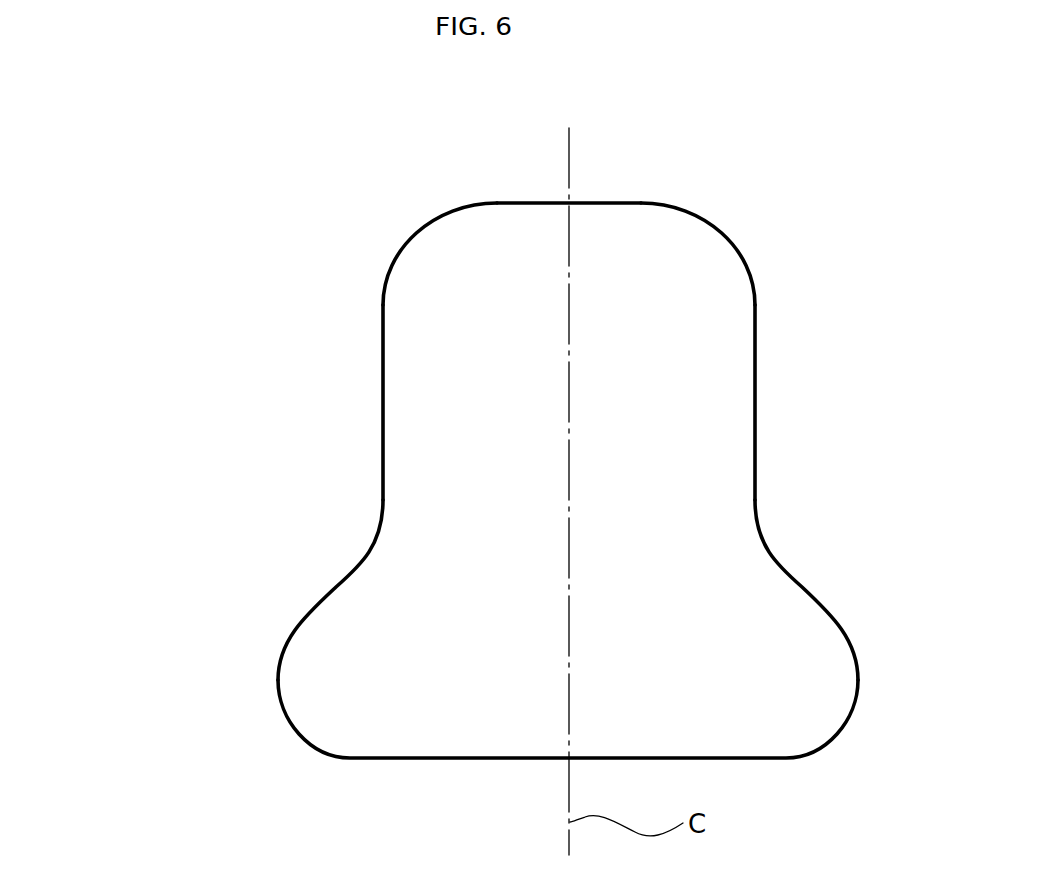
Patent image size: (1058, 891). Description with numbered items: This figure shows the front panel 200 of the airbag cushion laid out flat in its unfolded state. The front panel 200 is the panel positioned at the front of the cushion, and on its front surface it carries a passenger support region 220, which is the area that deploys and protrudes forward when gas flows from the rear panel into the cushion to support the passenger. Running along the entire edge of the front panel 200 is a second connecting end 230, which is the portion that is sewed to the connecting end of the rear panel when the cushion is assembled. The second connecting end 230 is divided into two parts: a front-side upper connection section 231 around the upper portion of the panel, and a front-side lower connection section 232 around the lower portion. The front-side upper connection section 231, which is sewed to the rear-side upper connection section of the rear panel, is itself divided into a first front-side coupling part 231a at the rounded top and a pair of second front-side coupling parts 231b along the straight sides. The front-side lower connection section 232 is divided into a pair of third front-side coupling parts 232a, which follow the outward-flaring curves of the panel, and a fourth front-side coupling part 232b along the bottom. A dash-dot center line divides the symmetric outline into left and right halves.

The front panel 200 is at (460, 450).
The passenger support region 220 is at (633, 368).
The second connecting end 230 is at (460, 483).
The front-side upper connection section 231 is at (441, 332).
The first front-side coupling part 231a is at (523, 203).
The second front-side coupling parts 231b is at (383, 371).
The front-side lower connection section 232 is at (491, 651).
The third front-side coupling parts 232a is at (290, 640).
The fourth front-side coupling part 232b is at (412, 760).